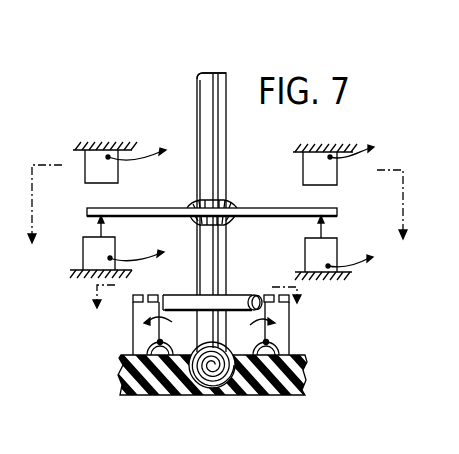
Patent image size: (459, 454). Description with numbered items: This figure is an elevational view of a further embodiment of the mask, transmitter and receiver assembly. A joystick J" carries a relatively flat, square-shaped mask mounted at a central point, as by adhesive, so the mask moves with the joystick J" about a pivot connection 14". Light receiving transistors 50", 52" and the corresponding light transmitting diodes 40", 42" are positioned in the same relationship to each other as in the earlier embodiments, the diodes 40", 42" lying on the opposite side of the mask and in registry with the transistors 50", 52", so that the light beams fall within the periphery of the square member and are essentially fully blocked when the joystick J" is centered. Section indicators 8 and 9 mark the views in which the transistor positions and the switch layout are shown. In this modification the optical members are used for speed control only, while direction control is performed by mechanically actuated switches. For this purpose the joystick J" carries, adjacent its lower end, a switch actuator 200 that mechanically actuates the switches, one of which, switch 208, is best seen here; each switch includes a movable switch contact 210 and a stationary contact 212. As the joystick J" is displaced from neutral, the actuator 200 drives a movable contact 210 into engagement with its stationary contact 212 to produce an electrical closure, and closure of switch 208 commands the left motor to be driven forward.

The joystick J is at (221, 72).
The pivot connection 14 is at (203, 372).
The switch actuator 200 is at (215, 295).
The movable switch contact 210 is at (283, 277).
The stationary contact 212 is at (288, 304).
The switch 208 is at (284, 334).
The light receiving transistor 52 is at (118, 166).
The light receiving transistor 50 is at (303, 172).
The light transmitting diode 42 is at (115, 246).
The light transmitting diode 40 is at (329, 255).
The section line 8- 8 is at (213, 223).
The section line 9- 9 is at (195, 311).